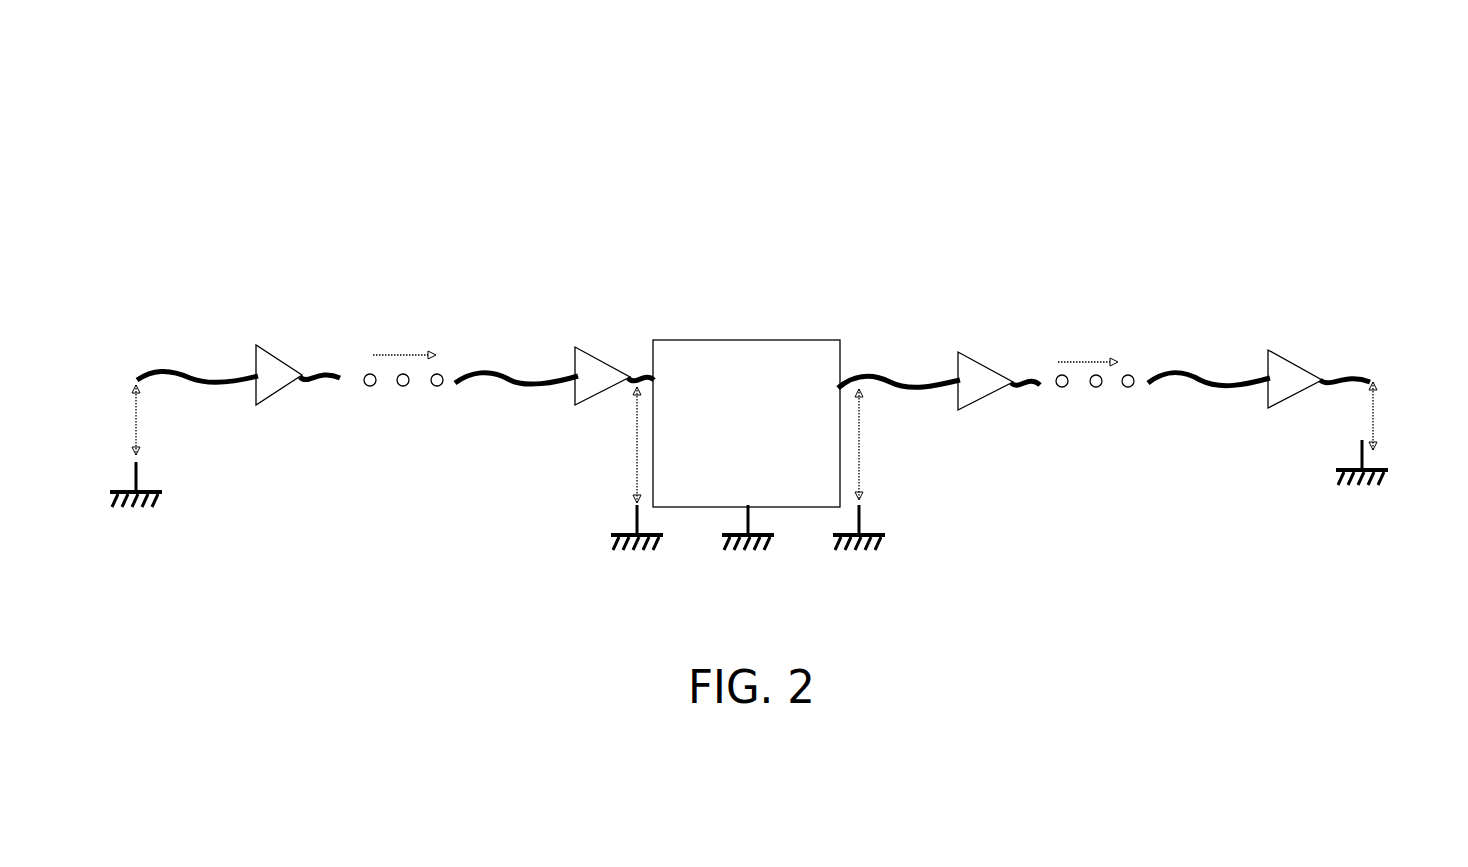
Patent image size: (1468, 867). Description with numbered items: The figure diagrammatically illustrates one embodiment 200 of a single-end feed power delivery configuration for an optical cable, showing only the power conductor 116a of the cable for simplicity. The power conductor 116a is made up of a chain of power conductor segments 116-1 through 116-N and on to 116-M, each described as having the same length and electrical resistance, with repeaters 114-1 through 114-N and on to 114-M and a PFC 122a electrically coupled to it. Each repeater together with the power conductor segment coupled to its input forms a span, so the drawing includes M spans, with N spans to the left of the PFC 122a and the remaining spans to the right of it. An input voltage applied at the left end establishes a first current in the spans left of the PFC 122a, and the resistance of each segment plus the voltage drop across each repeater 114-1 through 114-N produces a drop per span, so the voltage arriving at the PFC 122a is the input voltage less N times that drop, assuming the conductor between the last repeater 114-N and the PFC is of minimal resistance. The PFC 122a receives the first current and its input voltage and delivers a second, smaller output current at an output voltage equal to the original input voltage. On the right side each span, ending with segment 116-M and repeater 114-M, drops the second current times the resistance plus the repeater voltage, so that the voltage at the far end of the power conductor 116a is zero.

The single-end feed power delivery configuration 200 is at (388, 168).
The power conductor segment 116-1 is at (170, 374).
The repeater 114-1 is at (272, 395).
The power conductor segment 116-N is at (512, 385).
The repeater 114-N is at (578, 405).
The power conductor 116a is at (760, 391).
The PFC 122a is at (778, 446).
The power conductor segment 116-M is at (1188, 381).
The repeater 114-M is at (1296, 395).